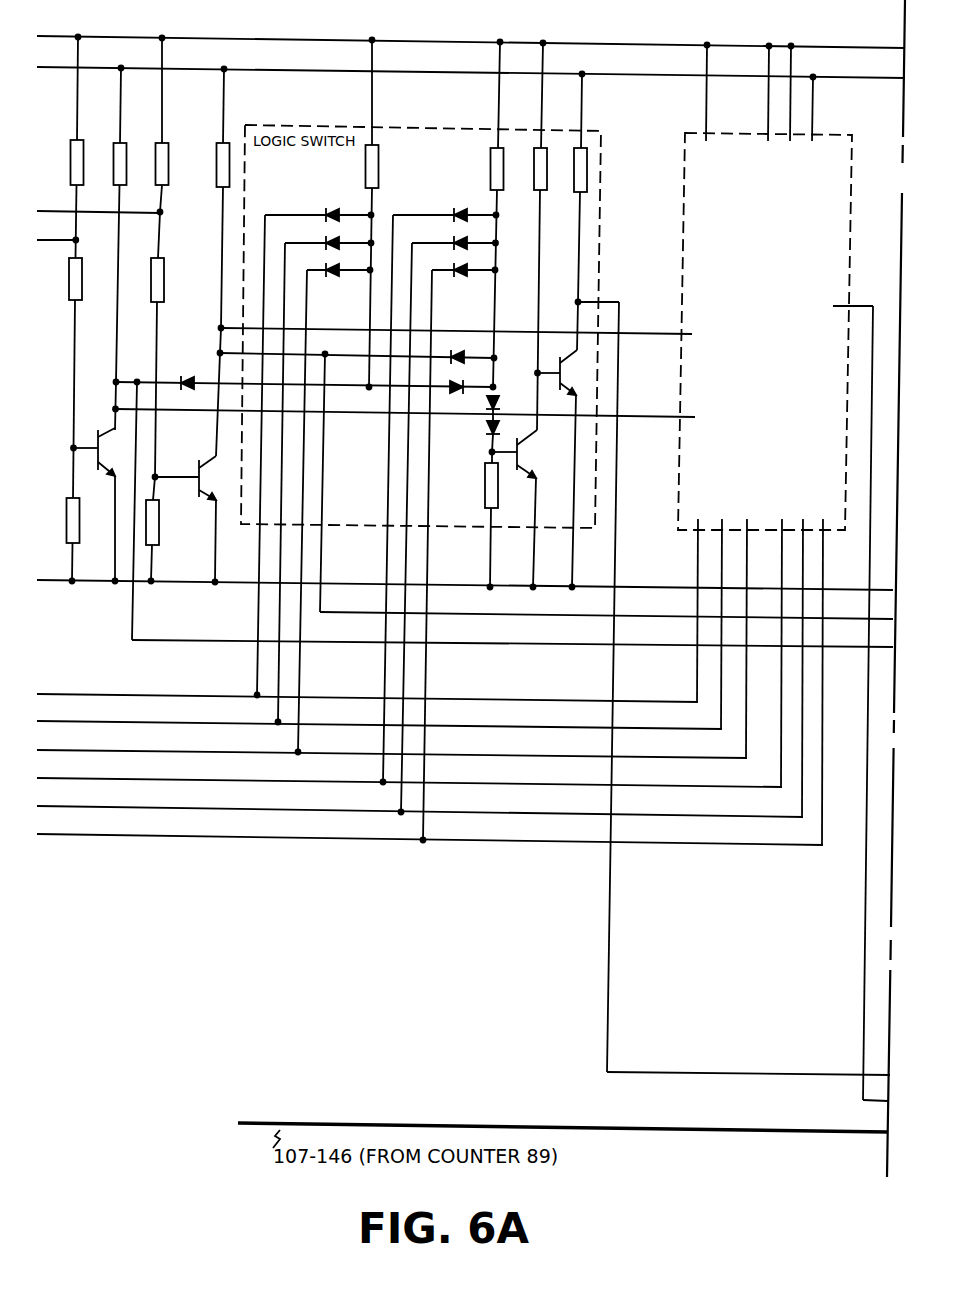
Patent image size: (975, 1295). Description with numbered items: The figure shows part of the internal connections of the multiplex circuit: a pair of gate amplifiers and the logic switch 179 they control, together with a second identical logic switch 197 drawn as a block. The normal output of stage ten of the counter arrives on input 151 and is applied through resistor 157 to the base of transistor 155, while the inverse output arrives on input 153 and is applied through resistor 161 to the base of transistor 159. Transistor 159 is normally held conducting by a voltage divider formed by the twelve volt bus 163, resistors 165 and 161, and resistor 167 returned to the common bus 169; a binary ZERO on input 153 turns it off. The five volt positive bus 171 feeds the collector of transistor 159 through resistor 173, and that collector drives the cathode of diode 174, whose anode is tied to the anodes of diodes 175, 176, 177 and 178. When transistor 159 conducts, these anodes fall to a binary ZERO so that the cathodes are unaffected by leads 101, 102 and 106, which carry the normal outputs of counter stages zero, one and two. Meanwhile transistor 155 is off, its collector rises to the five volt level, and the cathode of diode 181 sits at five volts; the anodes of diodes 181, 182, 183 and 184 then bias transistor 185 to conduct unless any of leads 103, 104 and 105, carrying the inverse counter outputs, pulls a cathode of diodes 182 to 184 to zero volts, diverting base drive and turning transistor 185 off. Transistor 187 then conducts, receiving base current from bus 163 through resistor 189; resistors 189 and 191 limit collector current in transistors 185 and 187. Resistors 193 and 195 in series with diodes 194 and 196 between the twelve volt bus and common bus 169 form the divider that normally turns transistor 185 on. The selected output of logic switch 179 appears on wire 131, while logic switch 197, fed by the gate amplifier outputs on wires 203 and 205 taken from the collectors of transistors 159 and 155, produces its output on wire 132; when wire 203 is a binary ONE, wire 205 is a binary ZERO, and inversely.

The 12 volt bus 163 is at (115, 31).
The 5 volt positive bus 171 is at (101, 65).
The resistor 165 is at (87, 138).
The resistor 173 is at (127, 138).
The resistor 161 is at (85, 276).
The resistor 157 is at (170, 276).
The resistor 167 is at (45, 539).
The input 151 is at (98, 202).
The input 153 is at (57, 232).
The transistor 159 is at (113, 432).
The transistor 155 is at (195, 491).
The common bus 169 is at (55, 590).
The logic switch 179 is at (390, 127).
The diode 176 is at (342, 207).
The diode 177 is at (333, 237).
The diode 178 is at (336, 280).
The resistor 193 is at (490, 162).
The diode 182 is at (455, 210).
The diode 183 is at (444, 241).
The diode 184 is at (449, 267).
The resistor 189 is at (533, 166).
The resistor 191 is at (570, 158).
The transistor 185 is at (528, 458).
The transistor 187 is at (566, 373).
The diode 181 is at (462, 338).
The diode 174 is at (184, 373).
The diode 175 is at (455, 398).
The diode 194 is at (499, 405).
The diode 196 is at (499, 434).
The resistor 195 is at (475, 470).
The logic switch 197 is at (724, 134).
The wire 203 is at (646, 418).
The wire 205 is at (644, 334).
The wire 101 is at (66, 694).
The wire 102 is at (69, 722).
The wire 103 is at (69, 835).
The wire 104 is at (69, 779).
The wire 105 is at (69, 807).
The wire 106 is at (69, 752).
The wire 131 is at (616, 902).
The wire 132 is at (856, 891).